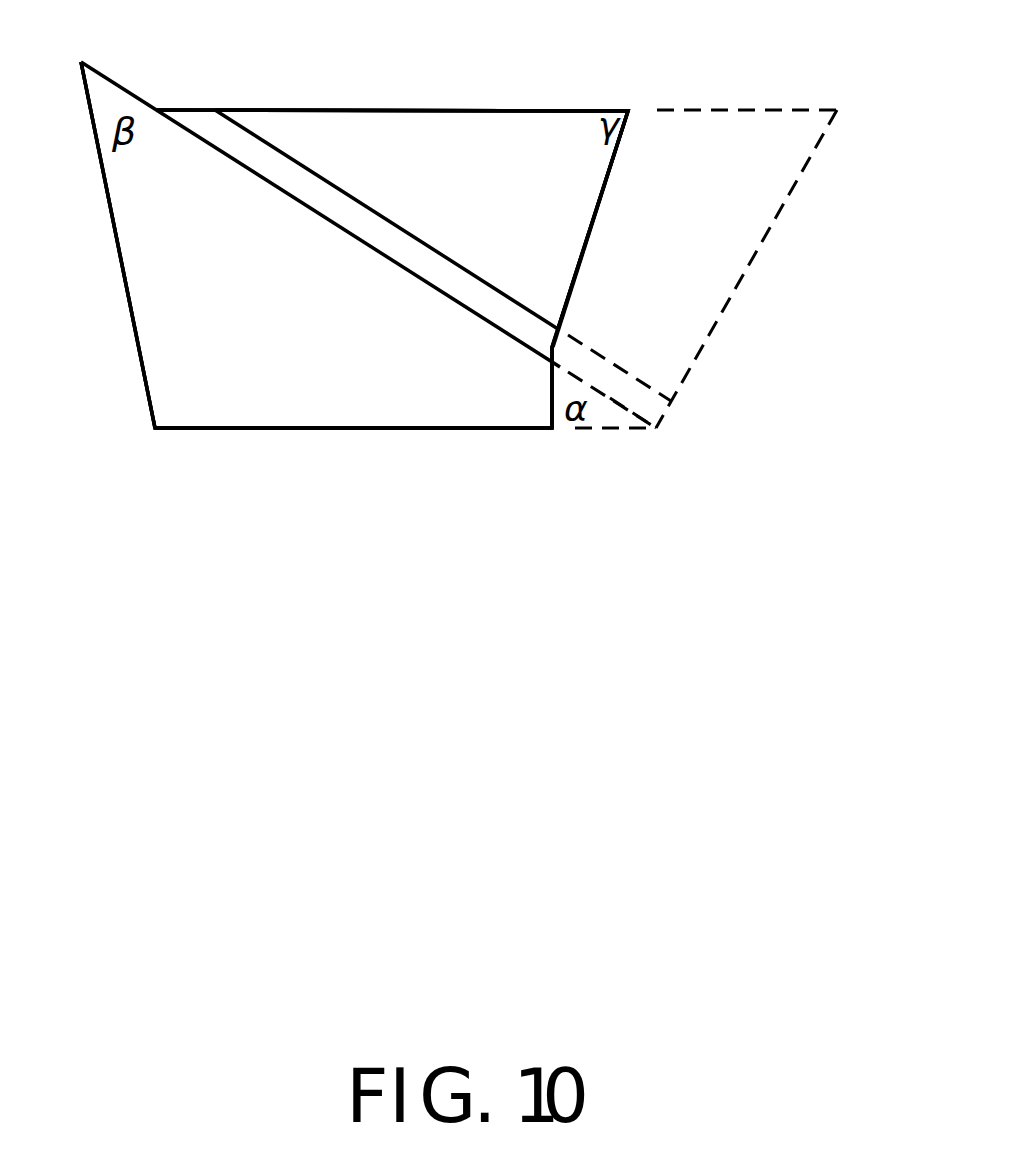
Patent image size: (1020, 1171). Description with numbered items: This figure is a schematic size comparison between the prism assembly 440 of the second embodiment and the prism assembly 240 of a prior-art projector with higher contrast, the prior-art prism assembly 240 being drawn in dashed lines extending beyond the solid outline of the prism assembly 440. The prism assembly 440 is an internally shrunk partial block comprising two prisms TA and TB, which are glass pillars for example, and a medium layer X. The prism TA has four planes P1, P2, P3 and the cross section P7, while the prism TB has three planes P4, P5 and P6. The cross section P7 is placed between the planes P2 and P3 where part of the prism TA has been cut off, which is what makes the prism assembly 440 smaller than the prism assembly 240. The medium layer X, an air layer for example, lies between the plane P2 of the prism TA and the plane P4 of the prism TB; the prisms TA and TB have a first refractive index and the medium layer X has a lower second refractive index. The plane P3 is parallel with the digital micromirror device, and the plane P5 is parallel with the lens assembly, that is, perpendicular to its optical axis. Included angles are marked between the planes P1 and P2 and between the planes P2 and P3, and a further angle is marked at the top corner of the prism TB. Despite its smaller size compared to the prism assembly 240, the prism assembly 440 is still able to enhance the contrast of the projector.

The prism assembly 440 is at (246, 101).
The prism assembly of prior art 240 is at (748, 97).
The plane P1 is at (117, 245).
The plane P2 is at (380, 252).
The plane P3 is at (180, 427).
The plane P4 is at (400, 228).
The plane P5 is at (390, 108).
The plane P6 is at (566, 306).
The cross section P7 is at (550, 400).
The prism TA is at (207, 320).
The prism TB is at (590, 108).
The medium layer X is at (655, 412).